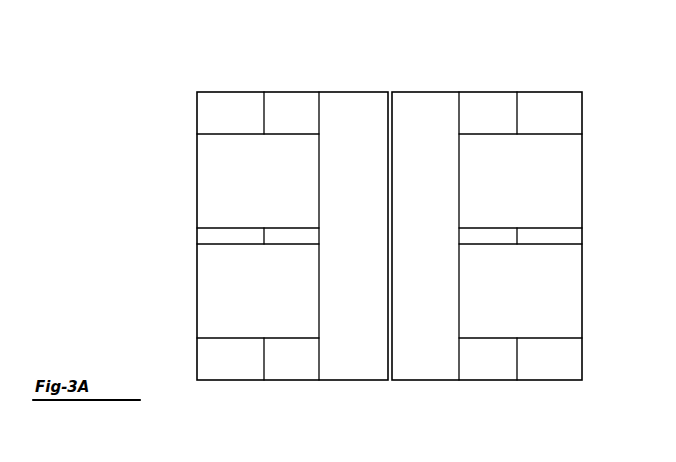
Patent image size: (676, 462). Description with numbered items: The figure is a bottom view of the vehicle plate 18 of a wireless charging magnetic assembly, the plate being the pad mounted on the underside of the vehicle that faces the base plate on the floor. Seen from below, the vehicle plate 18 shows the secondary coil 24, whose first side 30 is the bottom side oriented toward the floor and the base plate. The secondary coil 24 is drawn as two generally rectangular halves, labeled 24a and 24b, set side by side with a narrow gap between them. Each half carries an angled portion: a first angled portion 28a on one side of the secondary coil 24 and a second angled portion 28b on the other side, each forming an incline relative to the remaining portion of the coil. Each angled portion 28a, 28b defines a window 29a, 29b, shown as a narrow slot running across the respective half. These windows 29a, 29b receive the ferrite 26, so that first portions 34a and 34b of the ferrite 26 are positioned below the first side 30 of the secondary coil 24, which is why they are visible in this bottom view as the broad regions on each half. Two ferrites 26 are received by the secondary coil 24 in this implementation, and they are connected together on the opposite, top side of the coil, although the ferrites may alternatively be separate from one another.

The vehicle plate 18 is at (586, 58).
The secondary coil 24 is at (382, 40).
The first panel 24a is at (218, 92).
The second panel 24b is at (555, 92).
The ferrite 26 is at (197, 303).
The first angled portion 28a is at (304, 92).
The second angled portion 28b is at (484, 92).
The window 29a is at (288, 236).
The window 29b is at (487, 236).
The first side 30 is at (282, 101).
The first portion 34a is at (207, 157).
The first portion 34b is at (574, 157).